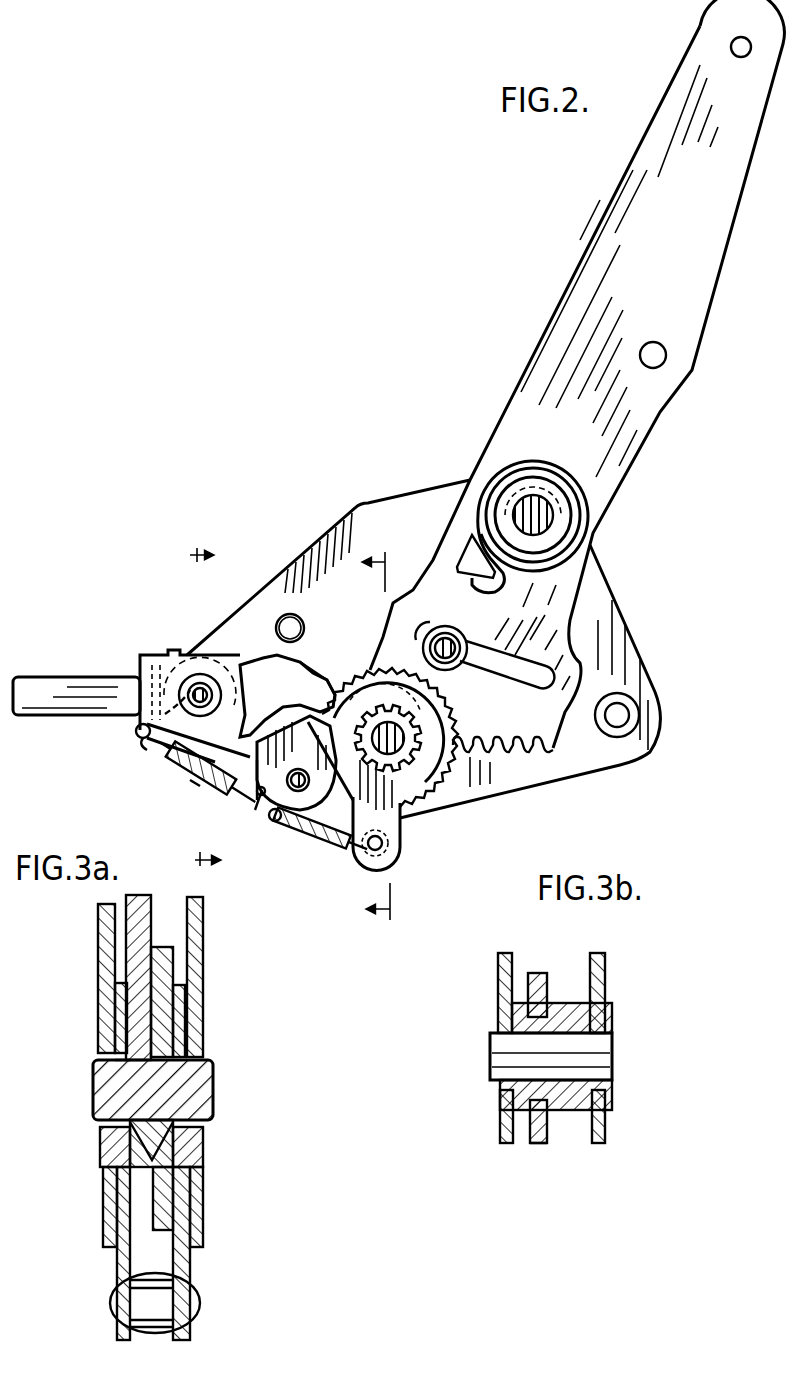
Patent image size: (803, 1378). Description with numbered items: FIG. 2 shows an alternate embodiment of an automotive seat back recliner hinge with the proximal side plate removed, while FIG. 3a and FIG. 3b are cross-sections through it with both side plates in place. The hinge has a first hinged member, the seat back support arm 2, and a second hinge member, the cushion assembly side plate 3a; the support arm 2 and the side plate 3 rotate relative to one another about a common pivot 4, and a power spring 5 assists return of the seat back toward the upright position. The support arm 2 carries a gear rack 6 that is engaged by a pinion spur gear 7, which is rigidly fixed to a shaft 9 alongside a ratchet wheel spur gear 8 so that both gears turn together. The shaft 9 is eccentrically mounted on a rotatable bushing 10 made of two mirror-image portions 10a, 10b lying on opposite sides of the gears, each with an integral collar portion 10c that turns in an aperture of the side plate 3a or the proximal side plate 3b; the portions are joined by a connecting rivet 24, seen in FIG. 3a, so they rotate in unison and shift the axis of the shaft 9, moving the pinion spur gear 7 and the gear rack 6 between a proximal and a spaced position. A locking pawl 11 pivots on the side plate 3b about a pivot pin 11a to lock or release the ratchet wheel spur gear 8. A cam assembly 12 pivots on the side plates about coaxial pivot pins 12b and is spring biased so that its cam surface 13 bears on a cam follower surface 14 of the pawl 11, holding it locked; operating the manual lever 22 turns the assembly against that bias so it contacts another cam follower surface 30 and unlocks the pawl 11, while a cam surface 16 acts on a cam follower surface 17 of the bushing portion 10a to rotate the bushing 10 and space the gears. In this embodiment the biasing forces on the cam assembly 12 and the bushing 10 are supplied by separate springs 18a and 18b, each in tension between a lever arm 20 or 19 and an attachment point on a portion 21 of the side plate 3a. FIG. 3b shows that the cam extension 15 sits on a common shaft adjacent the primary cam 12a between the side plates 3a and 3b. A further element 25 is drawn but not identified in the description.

In FIG. 2, the seat back support arm 2 is at (681, 226).
In FIG. 2, the side plate 3 is at (356, 608).
In FIG. 2, the cushion assembly side plate 3a is at (393, 738).
In FIG. 3a, the cushion assembly side plate 3a is at (97, 955).
In FIG. 3b, the cushion assembly side plate 3a is at (498, 1000).
In FIG. 2, the proximal side plate 3b is at (189, 708).
In FIG. 3a, the proximal side plate 3b is at (203, 925).
In FIG. 3b, the proximal side plate 3b is at (607, 1125).
In FIG. 2, the common pivot 4 is at (512, 529).
In FIG. 2, the power spring 5 is at (507, 463).
In FIG. 2, the gear rack 6 is at (492, 737).
In FIG. 3a, the gear rack 6 is at (137, 895).
In FIG. 2, the pinion spur gear 7 is at (404, 742).
In FIG. 3a, the pinion spur gear 7 is at (120, 1062).
In FIG. 3a, the ratchet wheel spur gear 8 is at (207, 1135).
In FIG. 2, the shaft 9 is at (422, 742).
In FIG. 3a, the shaft 9 is at (207, 1080).
In FIG. 2, the rotatable bushing 10 is at (403, 827).
In FIG. 3a, the bushing portion 10a is at (113, 1010).
In FIG. 3a, the bushing portion 10b is at (200, 1040).
In FIG. 3a, the collar portion 10c is at (105, 1140).
In FIG. 2, the locking pawl 11 is at (247, 790).
In FIG. 2, the pivot pin 11a is at (296, 796).
In FIG. 2, the cam assembly 12 is at (192, 648).
In FIG. 3b, the cam assembly 12 is at (628, 1030).
In FIG. 3b, the primary cam 12a is at (540, 1143).
In FIG. 2, the pivot pin 12b is at (200, 690).
In FIG. 3b, the pivot pin 12b is at (612, 1065).
In FIG. 2, the cam surface 13 is at (255, 690).
In FIG. 2, the cam follower surface 14 is at (272, 682).
In FIG. 3b, the cam extension 15 is at (525, 1120).
In FIG. 2, the cam surface 16 is at (330, 712).
In FIG. 2, the cam follower surface 17 is at (291, 762).
In FIG. 2, the spring 18a is at (178, 775).
In FIG. 2, the spring 18b is at (327, 837).
In FIG. 2, the lever arm 19 is at (397, 858).
In FIG. 3a, the lever arm 19 is at (190, 1338).
In FIG. 2, the lever arm 20 is at (133, 732).
In FIG. 2, the portion of side plate 21 is at (257, 812).
In FIG. 2, the manual lever 22 is at (42, 690).
In FIG. 2, the connecting rivet 24 is at (375, 851).
In FIG. 3a, the connecting rivet 24 is at (110, 1303).
In FIG. 2, the hidden link 25 is at (165, 714).
In FIG. 2, the cam follower surface 30 is at (195, 786).